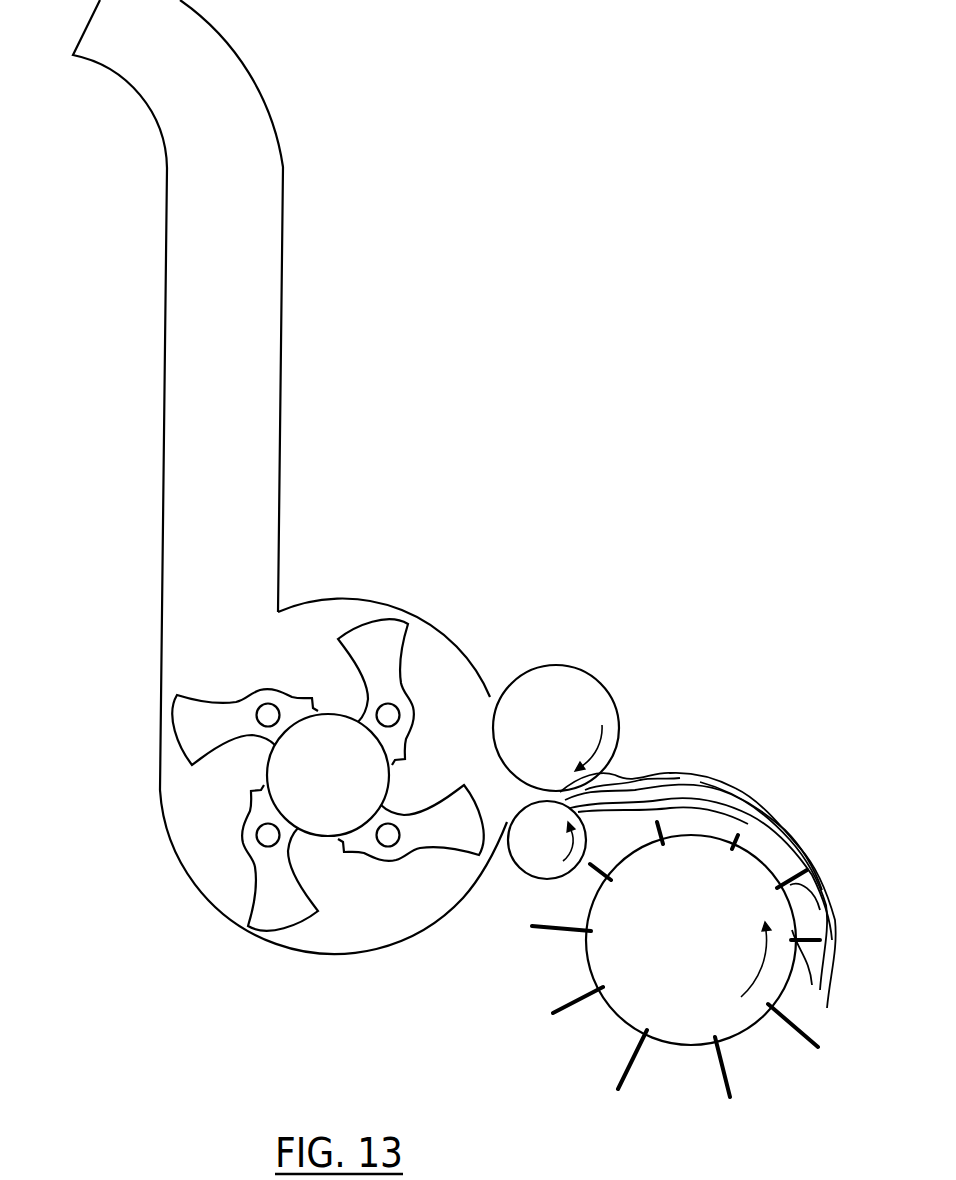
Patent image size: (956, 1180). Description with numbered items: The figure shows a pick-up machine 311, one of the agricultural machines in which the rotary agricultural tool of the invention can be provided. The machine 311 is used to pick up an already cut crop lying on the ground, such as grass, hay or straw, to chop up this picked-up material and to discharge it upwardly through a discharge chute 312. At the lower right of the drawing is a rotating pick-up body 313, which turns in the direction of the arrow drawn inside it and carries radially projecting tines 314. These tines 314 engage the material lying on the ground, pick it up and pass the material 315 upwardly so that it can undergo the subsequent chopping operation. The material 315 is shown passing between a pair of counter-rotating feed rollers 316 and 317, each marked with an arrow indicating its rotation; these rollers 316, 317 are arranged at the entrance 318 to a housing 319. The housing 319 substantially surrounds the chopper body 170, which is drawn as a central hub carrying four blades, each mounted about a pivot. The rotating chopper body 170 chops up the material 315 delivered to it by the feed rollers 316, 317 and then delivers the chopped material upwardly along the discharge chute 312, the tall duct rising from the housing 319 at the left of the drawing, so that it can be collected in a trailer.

The pick-up machine 311 is at (412, 508).
The discharge chute 312 is at (273, 295).
The pick-up body 313 is at (697, 1007).
The tines 314 is at (577, 1007).
The material 315 is at (717, 790).
The feed roller 316 is at (583, 690).
The feed roller 317 is at (525, 853).
The entrance 318 is at (483, 717).
The housing 319 is at (420, 622).
The chopper body 170 is at (300, 756).